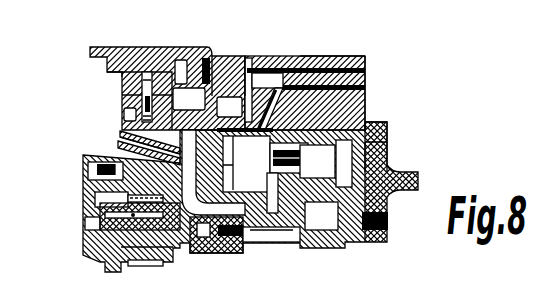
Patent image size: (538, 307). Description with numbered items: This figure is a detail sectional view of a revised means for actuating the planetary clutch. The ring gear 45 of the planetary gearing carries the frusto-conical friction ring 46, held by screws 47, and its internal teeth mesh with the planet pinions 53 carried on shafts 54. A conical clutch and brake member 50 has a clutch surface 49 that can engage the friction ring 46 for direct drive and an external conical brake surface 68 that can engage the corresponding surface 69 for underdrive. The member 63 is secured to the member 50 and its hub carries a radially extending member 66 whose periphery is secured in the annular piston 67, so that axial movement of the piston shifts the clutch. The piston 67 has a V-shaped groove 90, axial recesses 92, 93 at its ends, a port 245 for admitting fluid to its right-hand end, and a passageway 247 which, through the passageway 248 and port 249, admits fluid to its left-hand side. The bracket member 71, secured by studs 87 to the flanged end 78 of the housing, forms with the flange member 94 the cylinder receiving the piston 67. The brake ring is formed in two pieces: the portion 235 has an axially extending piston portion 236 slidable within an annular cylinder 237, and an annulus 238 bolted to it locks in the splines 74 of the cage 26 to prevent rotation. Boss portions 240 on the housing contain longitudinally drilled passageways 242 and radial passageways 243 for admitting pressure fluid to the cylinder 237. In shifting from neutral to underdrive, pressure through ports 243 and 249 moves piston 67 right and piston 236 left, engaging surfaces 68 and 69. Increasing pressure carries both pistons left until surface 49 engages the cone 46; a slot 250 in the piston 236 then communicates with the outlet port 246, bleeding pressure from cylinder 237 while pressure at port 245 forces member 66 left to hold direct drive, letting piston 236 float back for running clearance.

The cage 26 is at (122, 47).
The internal splines 74 is at (113, 75).
The annulus 238 is at (122, 93).
The brake surface 69 is at (123, 118).
The external conical brake surface 68 is at (121, 134).
The conical clutch and brake member 50 is at (83, 131).
The clutch surface 49 is at (118, 147).
The frusto-conical friction ring 46 is at (93, 157).
The screws 47 is at (90, 173).
The ring gear 45 is at (85, 186).
The V-shaped groove 90 is at (353, 105).
The boss portions 240 is at (340, 56).
The longitudinally drilled passageways 242 is at (305, 56).
The passageway 248 is at (270, 57).
The passageway 247 is at (366, 74).
The radial passageways 243 is at (258, 57).
The annular cylinder 237 is at (238, 68).
The outlet port 246 is at (202, 56).
The slot 250 is at (203, 57).
The ring portion 235 is at (189, 99).
The piston portion 236 is at (230, 107).
The port 249 is at (220, 140).
The axial recess 92 is at (226, 172).
The flange member 94 is at (233, 168).
The axial recess 93 is at (309, 176).
The annular piston 67 is at (321, 216).
The planet pinions 53 is at (143, 255).
The shafts 54 is at (186, 242).
The member 63 is at (241, 240).
The radially extending member 66 is at (286, 240).
The port 245 is at (387, 124).
The flanged end 78 is at (387, 140).
The bracket member 71 is at (387, 160).
The studs 87 is at (388, 205).